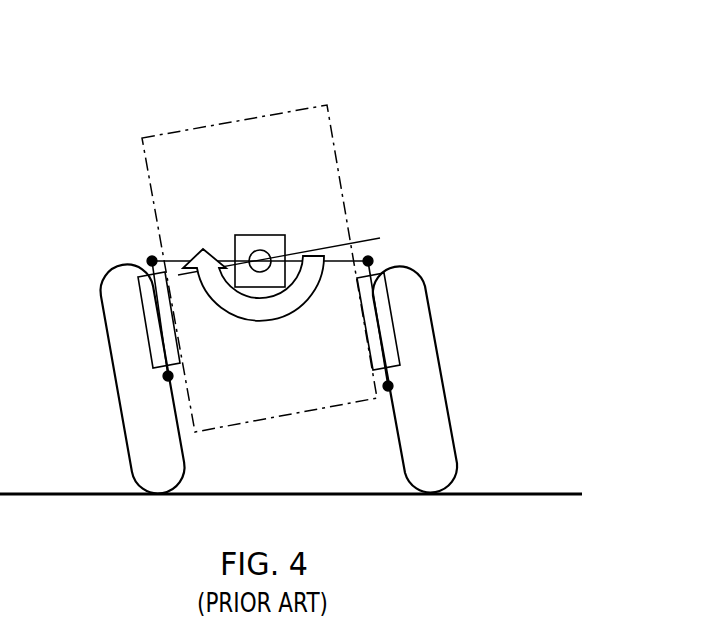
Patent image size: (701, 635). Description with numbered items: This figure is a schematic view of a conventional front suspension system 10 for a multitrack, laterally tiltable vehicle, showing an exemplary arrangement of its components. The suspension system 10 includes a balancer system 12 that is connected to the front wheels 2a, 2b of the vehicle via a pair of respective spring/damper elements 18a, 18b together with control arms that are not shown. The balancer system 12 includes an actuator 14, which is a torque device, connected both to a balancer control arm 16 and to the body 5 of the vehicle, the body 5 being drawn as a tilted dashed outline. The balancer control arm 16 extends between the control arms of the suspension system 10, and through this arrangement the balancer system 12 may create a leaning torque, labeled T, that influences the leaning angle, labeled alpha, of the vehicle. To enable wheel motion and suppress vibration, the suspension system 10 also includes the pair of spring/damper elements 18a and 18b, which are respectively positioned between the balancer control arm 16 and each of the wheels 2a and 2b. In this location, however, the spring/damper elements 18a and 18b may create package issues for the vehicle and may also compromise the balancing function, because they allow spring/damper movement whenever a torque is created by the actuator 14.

The suspension system 10 is at (433, 78).
The body 5 is at (238, 122).
The balancer system 12 is at (290, 216).
The actuator 14 is at (240, 244).
The balancer control arm 16 is at (168, 263).
The spring/damper element 18a is at (150, 322).
The spring/damper element 18b is at (383, 305).
The front wheel 2a is at (155, 488).
The front wheel 2b is at (432, 487).